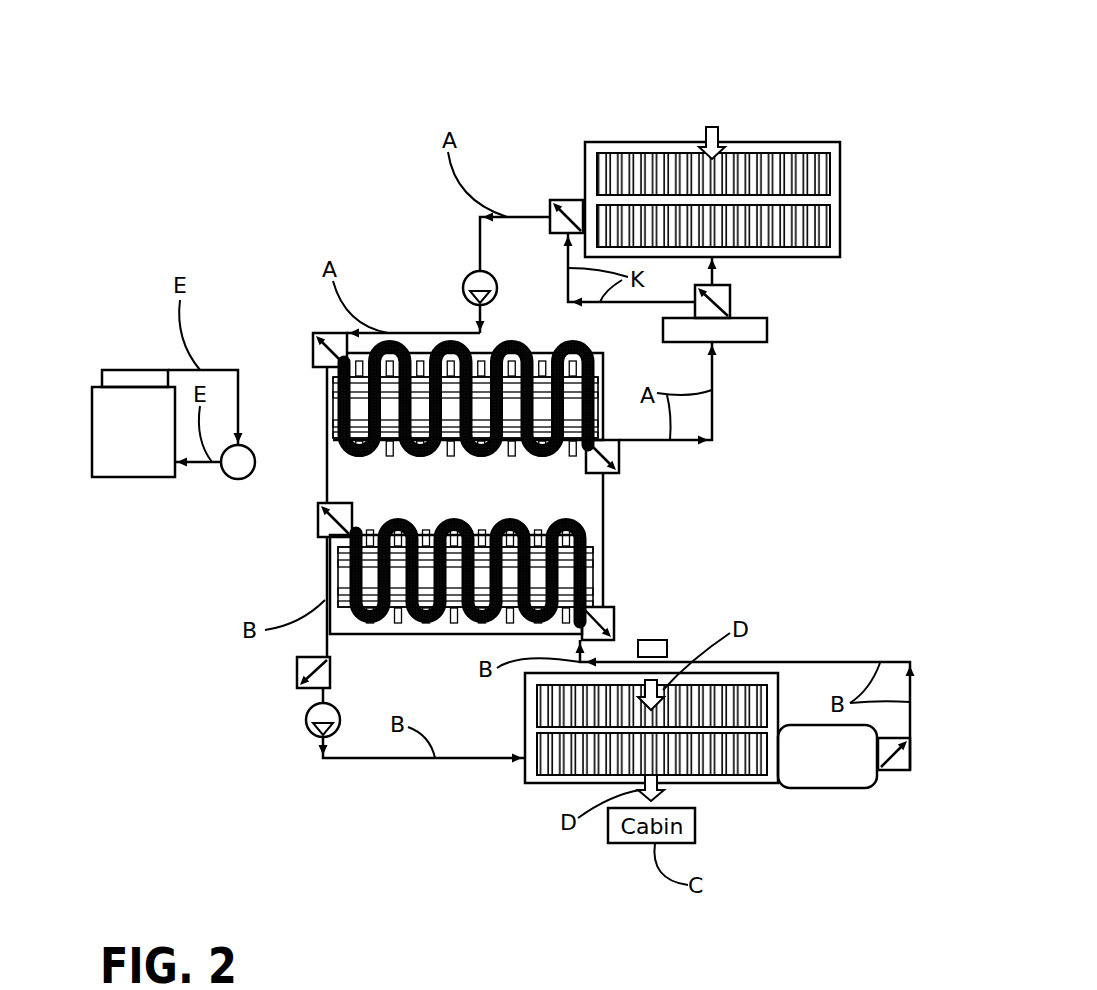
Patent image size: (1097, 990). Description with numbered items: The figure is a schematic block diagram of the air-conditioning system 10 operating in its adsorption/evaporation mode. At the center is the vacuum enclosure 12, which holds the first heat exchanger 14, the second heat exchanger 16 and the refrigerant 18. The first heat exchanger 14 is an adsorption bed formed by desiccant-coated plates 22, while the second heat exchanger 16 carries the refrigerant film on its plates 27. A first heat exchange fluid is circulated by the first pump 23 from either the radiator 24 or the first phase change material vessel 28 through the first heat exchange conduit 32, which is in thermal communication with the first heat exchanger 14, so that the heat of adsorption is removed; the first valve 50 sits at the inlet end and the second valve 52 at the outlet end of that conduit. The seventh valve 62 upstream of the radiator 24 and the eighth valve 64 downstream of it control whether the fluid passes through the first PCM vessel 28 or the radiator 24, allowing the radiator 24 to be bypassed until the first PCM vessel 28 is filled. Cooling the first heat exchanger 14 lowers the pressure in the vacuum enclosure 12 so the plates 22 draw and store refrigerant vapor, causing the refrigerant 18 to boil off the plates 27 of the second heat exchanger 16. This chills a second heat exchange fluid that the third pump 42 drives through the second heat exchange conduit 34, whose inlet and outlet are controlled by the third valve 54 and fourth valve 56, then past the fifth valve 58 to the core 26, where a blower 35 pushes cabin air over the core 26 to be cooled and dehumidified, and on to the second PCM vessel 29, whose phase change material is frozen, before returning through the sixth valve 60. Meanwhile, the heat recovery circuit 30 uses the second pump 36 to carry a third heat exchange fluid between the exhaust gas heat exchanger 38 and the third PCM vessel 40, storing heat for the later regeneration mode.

The air-conditioning system 10 is at (316, 214).
The vacuum enclosure 12 is at (604, 512).
The first heat exchanger 14 is at (573, 376).
The second heat exchanger 16 is at (340, 572).
The refrigerant 18 is at (402, 498).
The plates 22 is at (392, 458).
The first pump 23 is at (463, 288).
The radiator 24 is at (775, 142).
The core 26 is at (545, 783).
The plates 27 is at (445, 622).
The first phase change material vessel 28 is at (750, 342).
The second phase change material vessel 29 is at (832, 788).
The heat recovery circuit 30 is at (149, 572).
The first heat exchange conduit 32 is at (483, 458).
The second heat exchange conduit 34 is at (425, 622).
The blower 35 is at (658, 640).
The second pump 36 is at (240, 480).
The exhaust gas heat exchanger 38 is at (130, 477).
The third phase change material vessel 40 is at (135, 370).
The third pump 42 is at (306, 722).
The first valve 50 is at (333, 335).
The second valve 52 is at (619, 458).
The third valve 54 is at (608, 606).
The fourth valve 56 is at (318, 527).
The fifth valve 58 is at (297, 672).
The sixth valve 60 is at (893, 770).
The seventh valve 62 is at (727, 293).
The eighth valve 64 is at (575, 200).